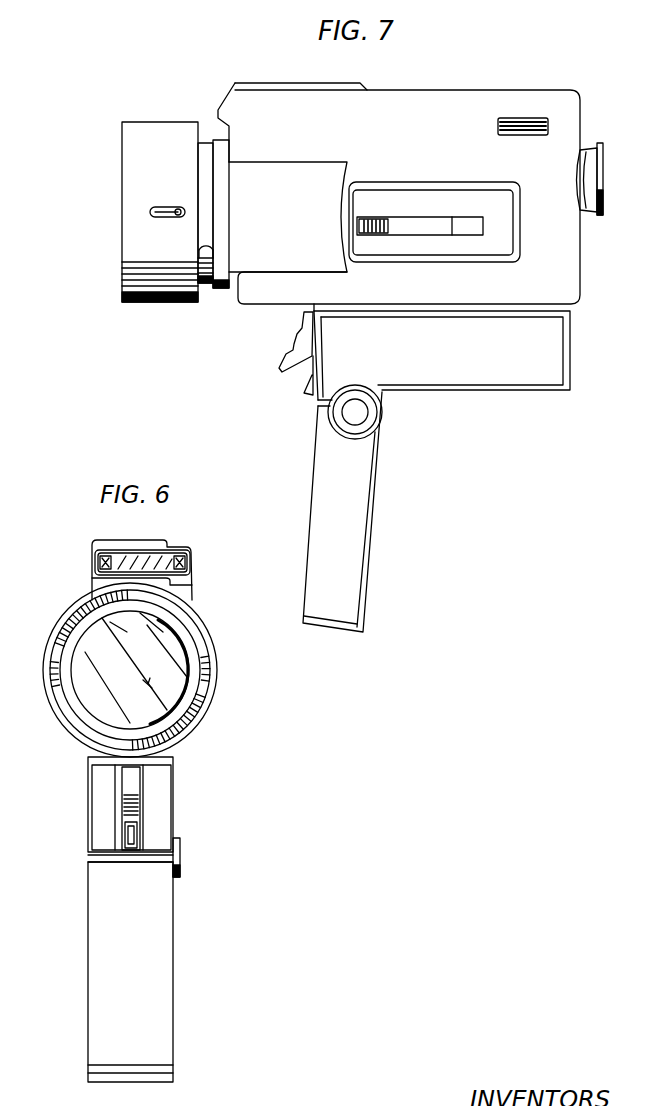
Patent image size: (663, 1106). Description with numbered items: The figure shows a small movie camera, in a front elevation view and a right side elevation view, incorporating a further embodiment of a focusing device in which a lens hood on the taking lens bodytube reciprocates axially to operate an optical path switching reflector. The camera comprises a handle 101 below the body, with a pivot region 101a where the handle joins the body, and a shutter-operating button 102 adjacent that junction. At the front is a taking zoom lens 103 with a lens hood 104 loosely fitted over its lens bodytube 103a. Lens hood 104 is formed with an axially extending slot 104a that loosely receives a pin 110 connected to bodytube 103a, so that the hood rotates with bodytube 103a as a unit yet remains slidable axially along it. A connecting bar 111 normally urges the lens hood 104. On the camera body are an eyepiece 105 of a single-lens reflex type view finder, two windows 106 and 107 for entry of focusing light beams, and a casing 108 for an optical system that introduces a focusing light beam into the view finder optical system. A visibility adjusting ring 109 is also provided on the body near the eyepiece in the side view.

In FIG. 7, the handle 101 is at (326, 453).
In FIG. 6, the handle 101 is at (97, 930).
In FIG. 7, the pivot hinge 101a is at (362, 410).
In FIG. 6, the pivot hinge 101a is at (180, 850).
In FIG. 7, the shutter-operating button 102 is at (296, 344).
In FIG. 6, the shutter-operating button 102 is at (135, 777).
In FIG. 6, the taking zoom lens 103 is at (80, 650).
In FIG. 7, the lens bodytube 103a is at (203, 147).
In FIG. 6, the lens bodytube 103a is at (200, 703).
In FIG. 7, the lens hood 104 is at (137, 130).
In FIG. 6, the lens hood 104 is at (218, 664).
In FIG. 7, the axially extending slot 104a is at (150, 212).
In FIG. 7, the eyepiece 105 is at (578, 151).
In FIG. 6, the window 106 is at (187, 561).
In FIG. 6, the window 107 is at (100, 564).
In FIG. 6, the casing 108 is at (192, 597).
In FIG. 7, the visibility adjusting ring 109 is at (527, 118).
In FIG. 7, the pin 110 is at (165, 217).
In FIG. 7, the connecting bar 111 is at (205, 283).